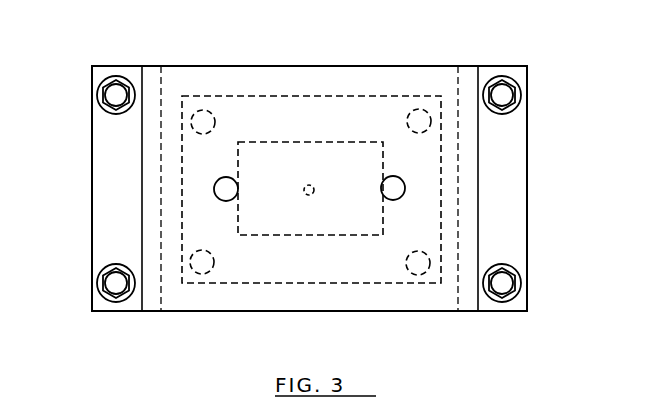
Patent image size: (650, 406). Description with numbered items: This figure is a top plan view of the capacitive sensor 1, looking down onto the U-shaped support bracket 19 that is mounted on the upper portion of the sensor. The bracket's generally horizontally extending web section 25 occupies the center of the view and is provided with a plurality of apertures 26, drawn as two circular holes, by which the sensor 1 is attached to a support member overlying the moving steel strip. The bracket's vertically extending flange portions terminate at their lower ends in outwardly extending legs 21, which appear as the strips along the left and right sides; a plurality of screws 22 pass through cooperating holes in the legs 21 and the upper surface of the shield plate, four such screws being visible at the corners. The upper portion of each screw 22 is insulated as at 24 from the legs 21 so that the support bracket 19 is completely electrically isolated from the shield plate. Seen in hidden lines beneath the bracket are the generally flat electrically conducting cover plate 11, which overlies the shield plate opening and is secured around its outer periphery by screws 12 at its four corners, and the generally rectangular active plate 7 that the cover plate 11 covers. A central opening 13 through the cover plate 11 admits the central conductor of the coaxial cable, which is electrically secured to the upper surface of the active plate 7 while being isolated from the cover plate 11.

The sensor 1 is at (197, 67).
The active plate 7 is at (313, 142).
The cover plate 11 is at (368, 283).
The screws 12 is at (210, 110).
The central opening 13 is at (314, 186).
The support bracket 19 is at (252, 311).
The legs 21 is at (112, 205).
The screws 22 is at (116, 82).
The insulation 24 is at (108, 113).
The web section 25 is at (314, 67).
The apertures 26 is at (220, 178).